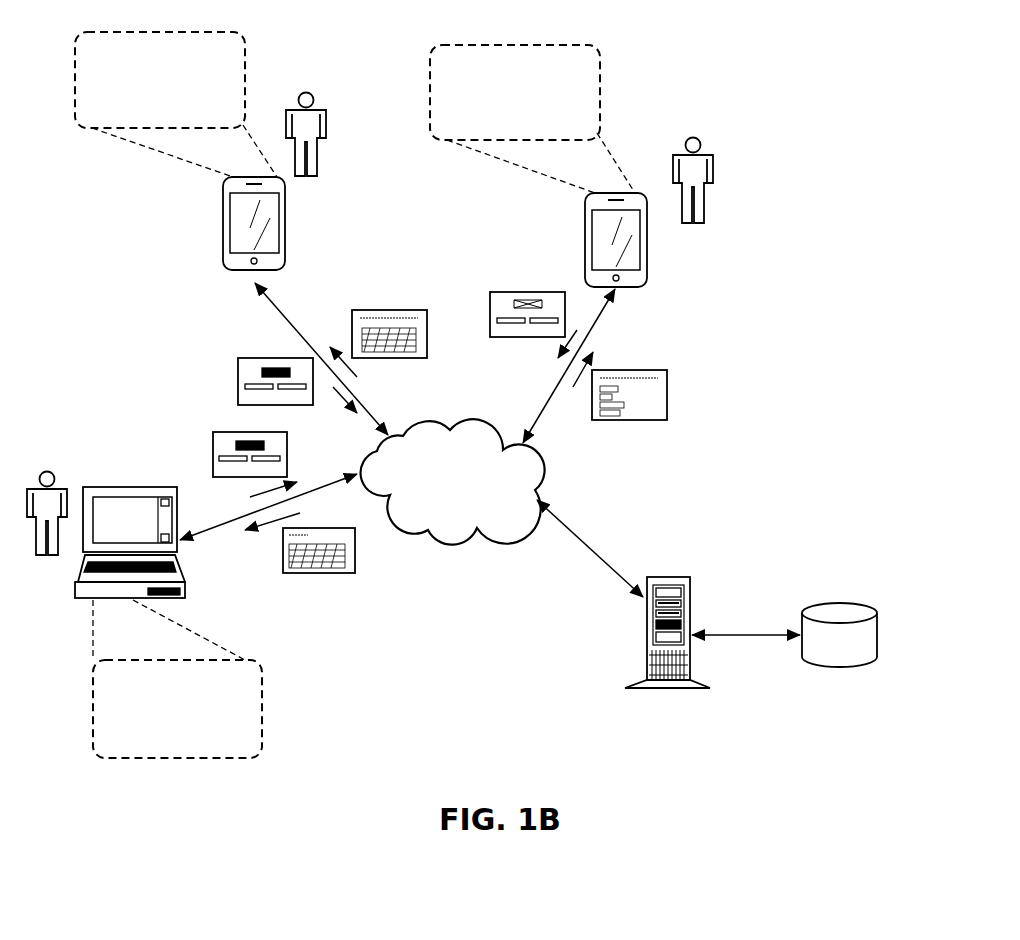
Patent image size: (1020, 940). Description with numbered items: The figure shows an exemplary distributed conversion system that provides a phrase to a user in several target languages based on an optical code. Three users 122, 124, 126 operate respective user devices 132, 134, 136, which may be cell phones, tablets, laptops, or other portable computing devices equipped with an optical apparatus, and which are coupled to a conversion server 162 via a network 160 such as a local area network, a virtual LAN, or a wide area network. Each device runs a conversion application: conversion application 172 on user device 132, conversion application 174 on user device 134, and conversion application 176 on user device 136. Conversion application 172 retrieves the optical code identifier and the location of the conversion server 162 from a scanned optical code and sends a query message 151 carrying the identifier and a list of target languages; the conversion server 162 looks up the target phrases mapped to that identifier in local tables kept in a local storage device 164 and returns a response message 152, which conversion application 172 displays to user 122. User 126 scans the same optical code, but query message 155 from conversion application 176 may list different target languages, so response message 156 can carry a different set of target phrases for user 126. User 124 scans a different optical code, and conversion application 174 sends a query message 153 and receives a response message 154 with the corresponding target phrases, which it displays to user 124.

The user 122 is at (325, 108).
The user 124 is at (712, 153).
The user 126 is at (32, 545).
The user device 132 is at (222, 213).
The user device 134 is at (648, 225).
The user device 136 is at (132, 487).
The query message 151 is at (290, 357).
The response message 152 is at (362, 308).
The query message 153 is at (538, 290).
The response message 154 is at (623, 370).
The query message 155 is at (212, 433).
The response message 156 is at (355, 560).
The network 160 is at (432, 496).
The conversion server 162 is at (690, 592).
The local storage device 164 is at (877, 647).
The conversion application 172 is at (176, 104).
The conversion application 174 is at (532, 119).
The conversion application 176 is at (177, 679).